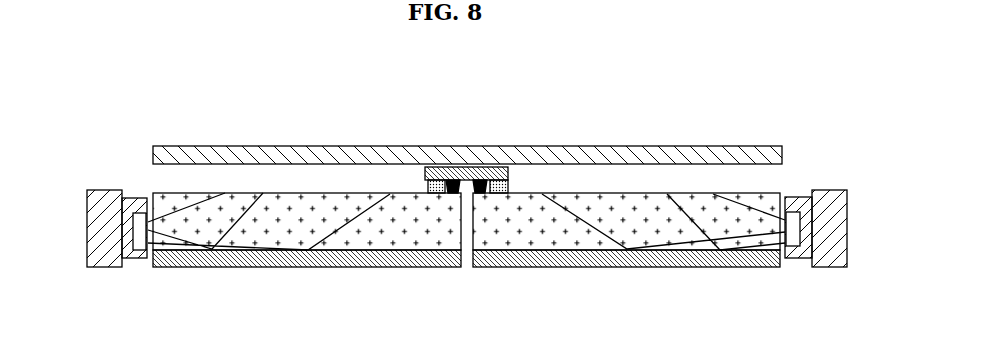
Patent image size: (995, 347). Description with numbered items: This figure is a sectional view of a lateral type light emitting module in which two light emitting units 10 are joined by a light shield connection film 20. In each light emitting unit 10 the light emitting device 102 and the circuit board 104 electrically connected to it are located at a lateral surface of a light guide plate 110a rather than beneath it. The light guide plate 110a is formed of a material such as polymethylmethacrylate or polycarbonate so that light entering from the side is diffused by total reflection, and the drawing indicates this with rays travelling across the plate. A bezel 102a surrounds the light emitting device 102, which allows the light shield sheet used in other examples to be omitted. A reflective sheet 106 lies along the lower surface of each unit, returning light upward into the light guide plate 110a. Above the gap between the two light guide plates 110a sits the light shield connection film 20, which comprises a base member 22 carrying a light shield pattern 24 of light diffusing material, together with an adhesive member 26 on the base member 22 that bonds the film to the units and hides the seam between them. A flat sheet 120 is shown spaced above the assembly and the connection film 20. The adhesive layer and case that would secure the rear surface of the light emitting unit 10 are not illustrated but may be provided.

The light emitting unit 10 is at (466, 269).
The light shield connection film 20 is at (495, 135).
The base member 22 is at (469, 176).
The light shield pattern 24 is at (483, 177).
The adhesive member 26 is at (492, 157).
The light emitting device 102 is at (128, 253).
The bezel 102a is at (147, 255).
The circuit board 104 is at (97, 225).
The reflective sheet 106 is at (294, 262).
The light guide plate 110a is at (403, 246).
The optical sheet 120 is at (782, 153).